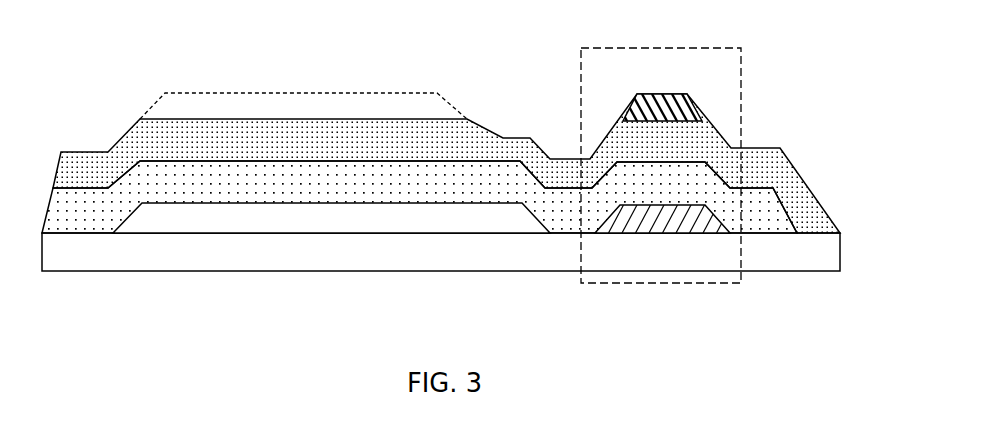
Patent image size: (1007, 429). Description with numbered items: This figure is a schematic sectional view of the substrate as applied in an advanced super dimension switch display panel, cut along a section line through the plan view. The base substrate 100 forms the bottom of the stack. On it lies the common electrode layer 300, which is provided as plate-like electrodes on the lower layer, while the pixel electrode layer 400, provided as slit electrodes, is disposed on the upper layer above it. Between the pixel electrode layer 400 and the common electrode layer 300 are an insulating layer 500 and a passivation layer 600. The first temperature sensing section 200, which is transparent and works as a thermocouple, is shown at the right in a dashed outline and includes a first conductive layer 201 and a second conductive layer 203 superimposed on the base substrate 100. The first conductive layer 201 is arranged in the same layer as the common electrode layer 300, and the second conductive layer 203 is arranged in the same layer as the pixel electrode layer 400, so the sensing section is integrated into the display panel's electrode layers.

The base substrate 100 is at (803, 245).
The first temperature sensing section 200 is at (672, 144).
The first conductive layer 201 is at (677, 227).
The second conductive layer 203 is at (647, 112).
The common electrode layer 300 is at (337, 218).
The pixel electrode layer 400 is at (253, 108).
The insulating layer 500 is at (165, 178).
The passivation layer 600 is at (770, 172).